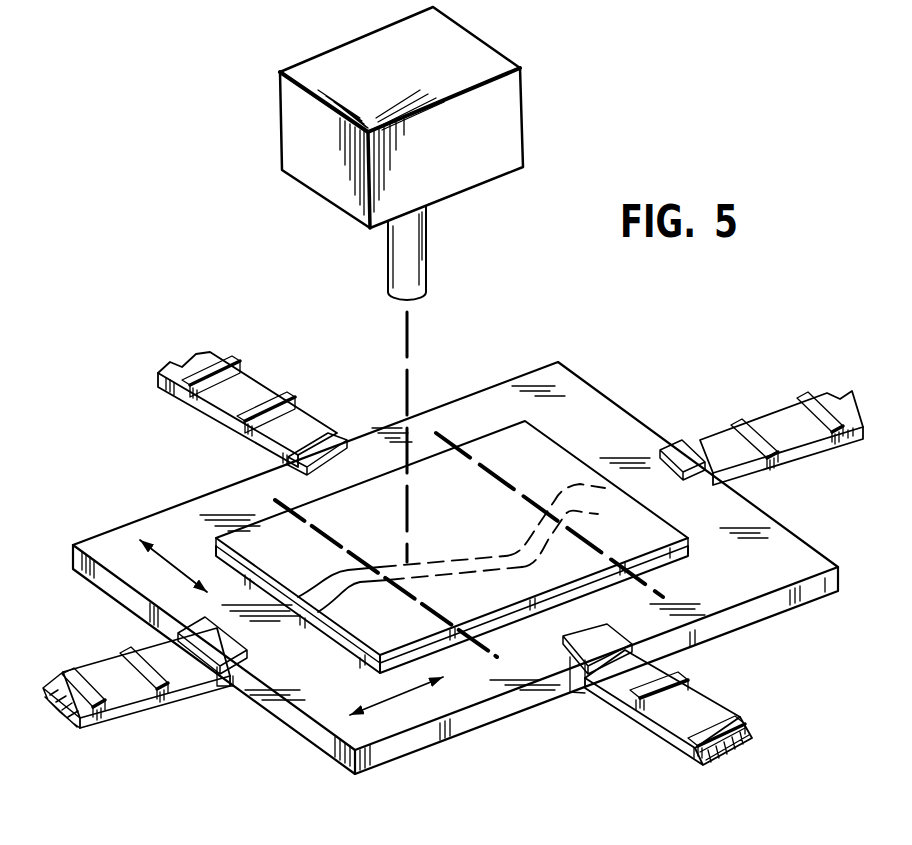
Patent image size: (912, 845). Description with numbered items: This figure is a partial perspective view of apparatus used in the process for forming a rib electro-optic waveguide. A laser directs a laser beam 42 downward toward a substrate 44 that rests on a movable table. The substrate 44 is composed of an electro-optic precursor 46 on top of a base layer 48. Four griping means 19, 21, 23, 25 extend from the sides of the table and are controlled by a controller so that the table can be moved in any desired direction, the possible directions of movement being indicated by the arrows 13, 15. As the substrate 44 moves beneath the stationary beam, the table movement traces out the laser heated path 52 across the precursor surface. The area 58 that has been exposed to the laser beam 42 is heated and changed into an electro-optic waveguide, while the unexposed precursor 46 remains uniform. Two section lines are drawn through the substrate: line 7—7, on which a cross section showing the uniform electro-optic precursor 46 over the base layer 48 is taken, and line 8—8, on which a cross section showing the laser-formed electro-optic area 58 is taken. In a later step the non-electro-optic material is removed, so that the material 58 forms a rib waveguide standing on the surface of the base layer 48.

The substrate 44 is at (295, 151).
The laser beam 42 is at (405, 341).
The electro-optic precursor 46 is at (325, 624).
The base layer 48 is at (345, 650).
The electro-optic area 58 is at (327, 582).
The laser heated path 52 is at (596, 518).
The griping means 19 is at (262, 390).
The griping means 21 is at (780, 422).
The griping means 23 is at (707, 702).
The griping means 25 is at (133, 705).
The arrow 13 is at (185, 566).
The arrow 15 is at (385, 692).
The section line 7- 7 is at (436, 433).
The section line 8- 8 is at (275, 500).